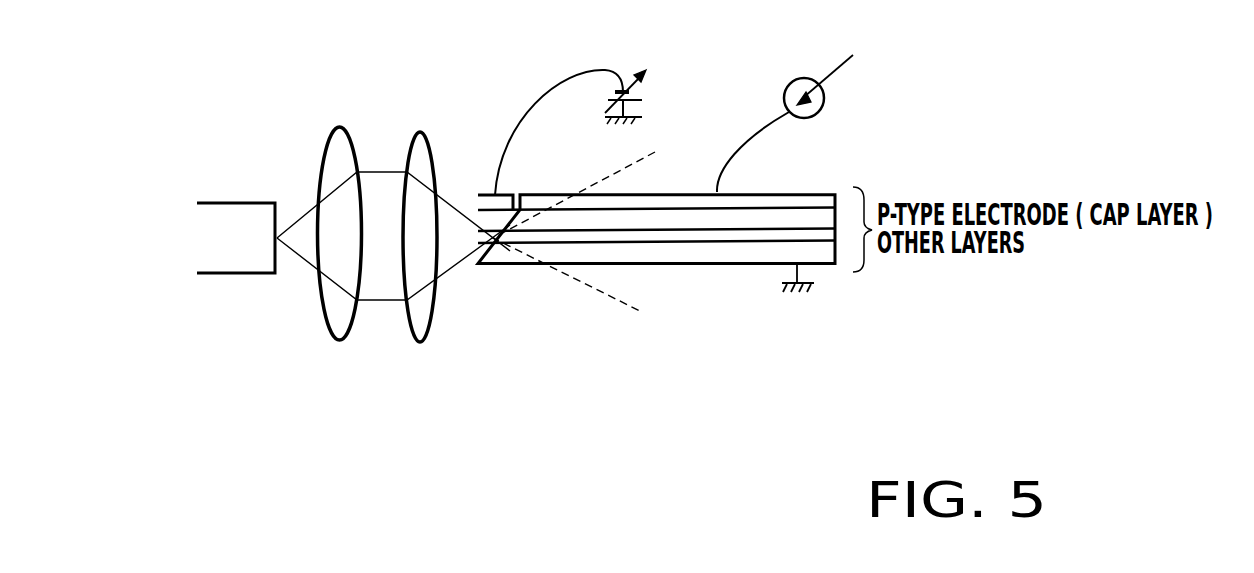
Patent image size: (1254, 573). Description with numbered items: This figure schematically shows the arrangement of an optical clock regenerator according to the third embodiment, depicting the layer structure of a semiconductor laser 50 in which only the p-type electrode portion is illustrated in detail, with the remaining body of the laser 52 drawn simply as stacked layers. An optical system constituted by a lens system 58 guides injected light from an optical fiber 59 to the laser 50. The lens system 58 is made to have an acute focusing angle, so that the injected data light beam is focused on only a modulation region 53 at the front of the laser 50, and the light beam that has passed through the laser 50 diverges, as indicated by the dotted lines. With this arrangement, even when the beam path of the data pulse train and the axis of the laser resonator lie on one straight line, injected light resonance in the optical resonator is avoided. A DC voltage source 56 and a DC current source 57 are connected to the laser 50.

The laser 50 is at (848, 387).
The laser chip main body 52 is at (842, 308).
The modulation region 53 is at (521, 309).
The DC voltage source 56 is at (570, 113).
The DC current source 57 is at (788, 123).
The lens system 58 is at (437, 117).
The optical fiber 59 is at (215, 212).